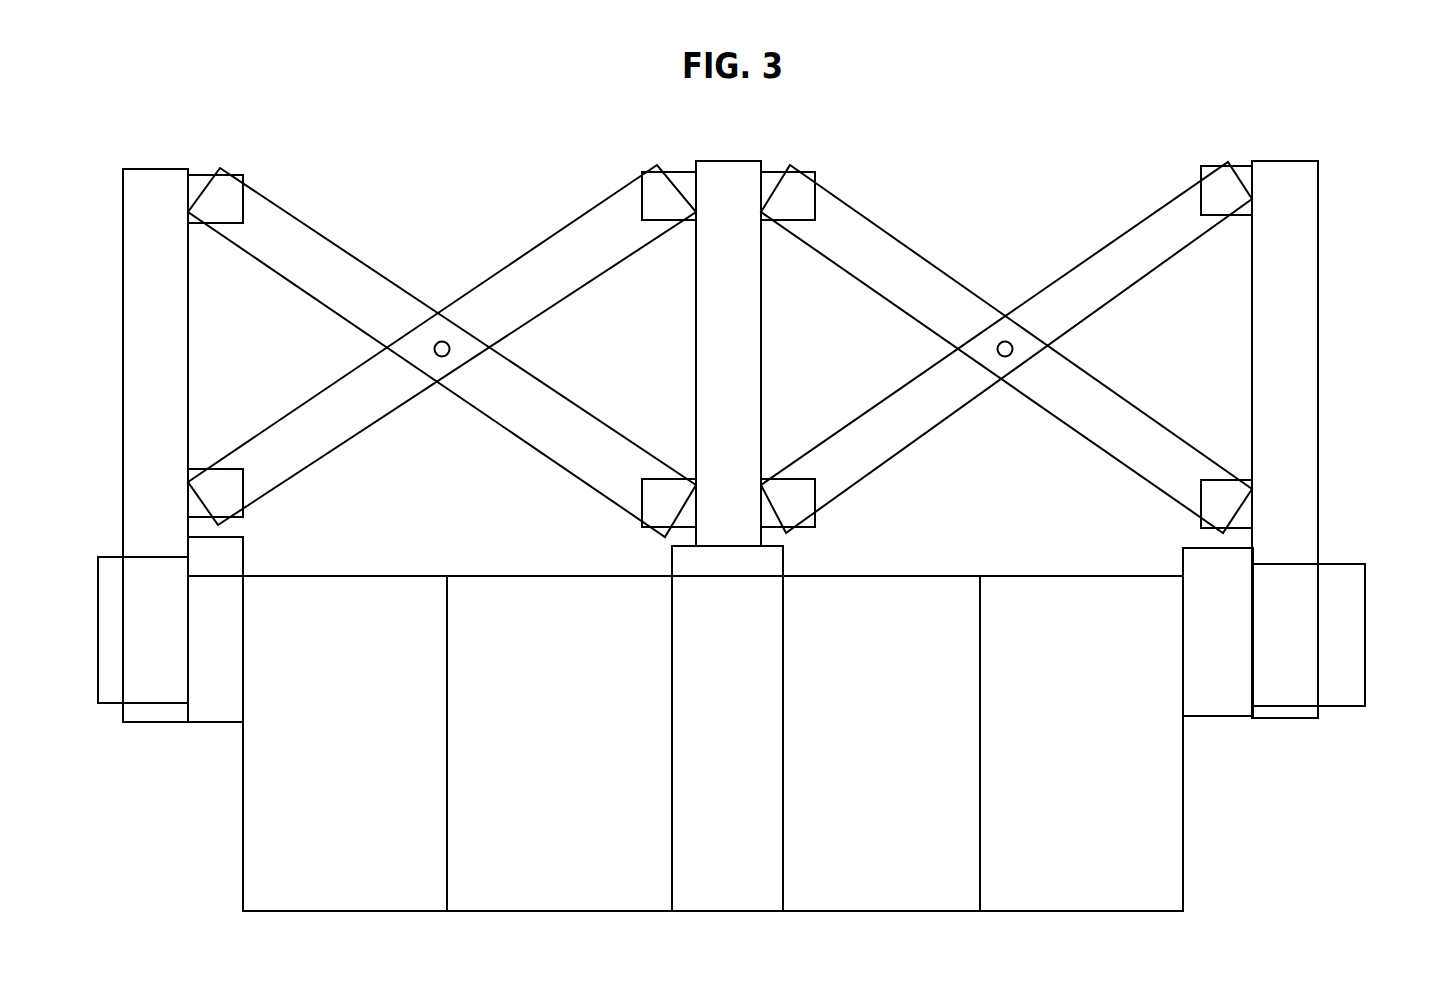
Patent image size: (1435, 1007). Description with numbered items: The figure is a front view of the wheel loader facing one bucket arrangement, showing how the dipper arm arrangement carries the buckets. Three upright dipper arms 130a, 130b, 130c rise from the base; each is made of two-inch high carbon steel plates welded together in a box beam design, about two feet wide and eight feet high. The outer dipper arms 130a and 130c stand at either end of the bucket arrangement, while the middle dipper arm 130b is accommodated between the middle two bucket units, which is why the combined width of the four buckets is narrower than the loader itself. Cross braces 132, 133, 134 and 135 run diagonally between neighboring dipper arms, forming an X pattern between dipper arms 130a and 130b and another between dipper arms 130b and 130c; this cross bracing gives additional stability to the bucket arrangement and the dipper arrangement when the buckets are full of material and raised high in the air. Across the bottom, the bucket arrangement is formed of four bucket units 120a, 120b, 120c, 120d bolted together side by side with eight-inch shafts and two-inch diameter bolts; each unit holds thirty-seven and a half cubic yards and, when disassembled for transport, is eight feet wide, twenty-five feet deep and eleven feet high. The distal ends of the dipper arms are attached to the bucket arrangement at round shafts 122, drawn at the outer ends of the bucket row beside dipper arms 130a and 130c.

The dipper arm 130a is at (122, 283).
The dipper arm 130b is at (725, 178).
The dipper arm 130c is at (1318, 285).
The cross brace 132 is at (278, 226).
The cross brace 133 is at (597, 216).
The cross brace 134 is at (877, 245).
The cross brace 135 is at (1123, 237).
The round shaft 122 is at (115, 655).
The bucket unit 120a is at (345, 743).
The bucket unit 120b is at (559, 743).
The bucket unit 120c is at (881, 743).
The bucket unit 120d is at (1081, 743).